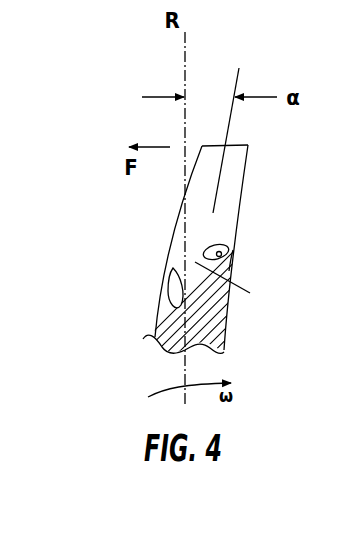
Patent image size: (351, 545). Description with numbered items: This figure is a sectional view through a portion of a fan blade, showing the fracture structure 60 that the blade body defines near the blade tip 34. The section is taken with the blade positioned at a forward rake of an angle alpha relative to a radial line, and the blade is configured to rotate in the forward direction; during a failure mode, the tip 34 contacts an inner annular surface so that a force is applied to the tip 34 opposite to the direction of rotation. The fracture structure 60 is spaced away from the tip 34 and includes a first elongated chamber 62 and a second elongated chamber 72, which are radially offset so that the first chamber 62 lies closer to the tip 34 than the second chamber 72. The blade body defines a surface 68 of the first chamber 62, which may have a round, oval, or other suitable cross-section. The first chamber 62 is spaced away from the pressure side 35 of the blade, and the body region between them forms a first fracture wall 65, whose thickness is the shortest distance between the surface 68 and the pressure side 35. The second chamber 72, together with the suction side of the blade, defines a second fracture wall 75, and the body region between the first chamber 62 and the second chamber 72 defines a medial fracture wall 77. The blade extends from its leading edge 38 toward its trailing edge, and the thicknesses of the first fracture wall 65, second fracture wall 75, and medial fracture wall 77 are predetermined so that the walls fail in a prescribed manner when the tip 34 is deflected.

The tip 34 is at (248, 146).
The pressure side 35 is at (241, 176).
The leading edge 38 is at (143, 339).
The fracture structure 60 is at (200, 250).
The first elongated chamber 62 is at (229, 247).
The first fracture wall 65 is at (222, 254).
The surface 68 is at (229, 270).
The second elongated chamber 72 is at (166, 282).
The second fracture wall 75 is at (154, 302).
The medial fracture wall 77 is at (250, 293).